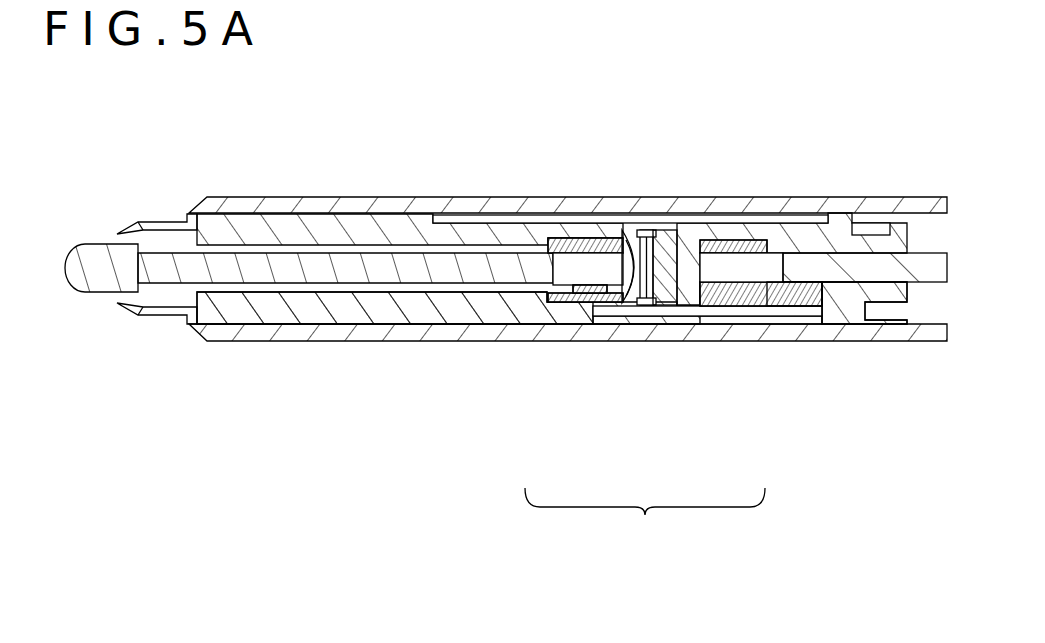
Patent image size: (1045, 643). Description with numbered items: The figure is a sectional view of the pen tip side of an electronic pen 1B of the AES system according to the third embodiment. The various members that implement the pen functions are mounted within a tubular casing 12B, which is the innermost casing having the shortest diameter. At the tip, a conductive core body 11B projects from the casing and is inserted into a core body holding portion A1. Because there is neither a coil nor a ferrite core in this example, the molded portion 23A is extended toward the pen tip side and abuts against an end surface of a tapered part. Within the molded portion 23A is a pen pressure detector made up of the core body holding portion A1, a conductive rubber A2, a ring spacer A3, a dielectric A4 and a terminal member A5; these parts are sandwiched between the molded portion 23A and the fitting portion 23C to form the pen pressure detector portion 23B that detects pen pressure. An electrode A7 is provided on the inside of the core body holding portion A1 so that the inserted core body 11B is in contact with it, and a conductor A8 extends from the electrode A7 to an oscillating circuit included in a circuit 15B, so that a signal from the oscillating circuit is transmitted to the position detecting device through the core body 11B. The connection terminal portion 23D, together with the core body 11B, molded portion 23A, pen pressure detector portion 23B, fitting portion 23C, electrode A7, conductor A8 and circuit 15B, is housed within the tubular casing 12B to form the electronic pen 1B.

The electronic pen 1B is at (326, 89).
The core body 11B is at (72, 273).
The tubular casing 12B is at (676, 197).
The circuit 15B is at (793, 268).
The molded portion 23A is at (507, 313).
The pen pressure detector portion 23B is at (645, 515).
The fitting portion 23C is at (857, 310).
The connection terminal portion 23D is at (897, 232).
The core body holding portion A1 is at (562, 297).
The conductive rubber A2 is at (642, 300).
The ring spacer A3 is at (655, 300).
The dielectric A4 is at (657, 300).
The terminal member A5 is at (684, 262).
The electrode A7 is at (585, 293).
The conductor A8 is at (795, 300).